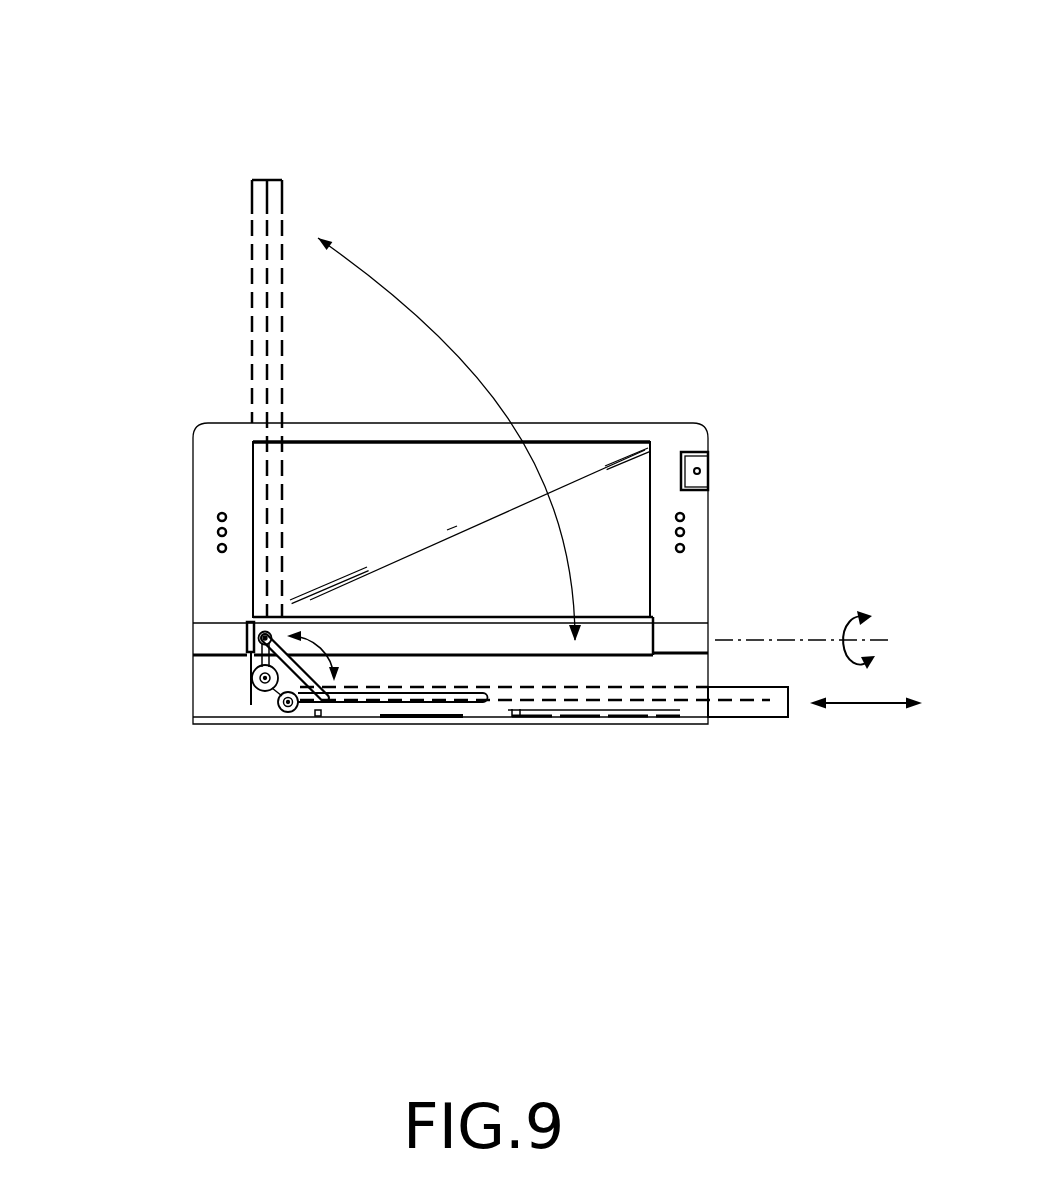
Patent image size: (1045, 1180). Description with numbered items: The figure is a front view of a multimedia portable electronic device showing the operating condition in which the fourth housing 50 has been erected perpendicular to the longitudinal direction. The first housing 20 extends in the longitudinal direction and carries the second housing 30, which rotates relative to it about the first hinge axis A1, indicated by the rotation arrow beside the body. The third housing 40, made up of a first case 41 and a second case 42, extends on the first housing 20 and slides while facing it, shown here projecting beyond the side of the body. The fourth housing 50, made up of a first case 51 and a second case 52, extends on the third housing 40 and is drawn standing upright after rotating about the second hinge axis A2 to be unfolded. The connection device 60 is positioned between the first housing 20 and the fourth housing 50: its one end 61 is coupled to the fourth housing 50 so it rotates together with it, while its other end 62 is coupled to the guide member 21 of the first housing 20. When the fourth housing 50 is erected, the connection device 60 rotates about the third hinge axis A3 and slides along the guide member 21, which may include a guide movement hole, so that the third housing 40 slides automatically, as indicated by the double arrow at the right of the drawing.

The first housing 20 is at (185, 704).
The guide member 21 is at (487, 707).
The second housing 30 is at (698, 527).
The third housing 40 is at (553, 800).
The first case 41 is at (777, 700).
The second case 42 is at (733, 712).
The fourth housing 50 is at (275, 308).
The first case 51 is at (275, 180).
The second case 52 is at (256, 180).
The connection device 60 is at (250, 709).
The one end of the connection device 61 is at (328, 703).
The other end of the connection device 62 is at (250, 617).
The first hinge axis A1 is at (872, 642).
The second hinge axis A2 is at (285, 713).
The third hinge axis A3 is at (247, 630).